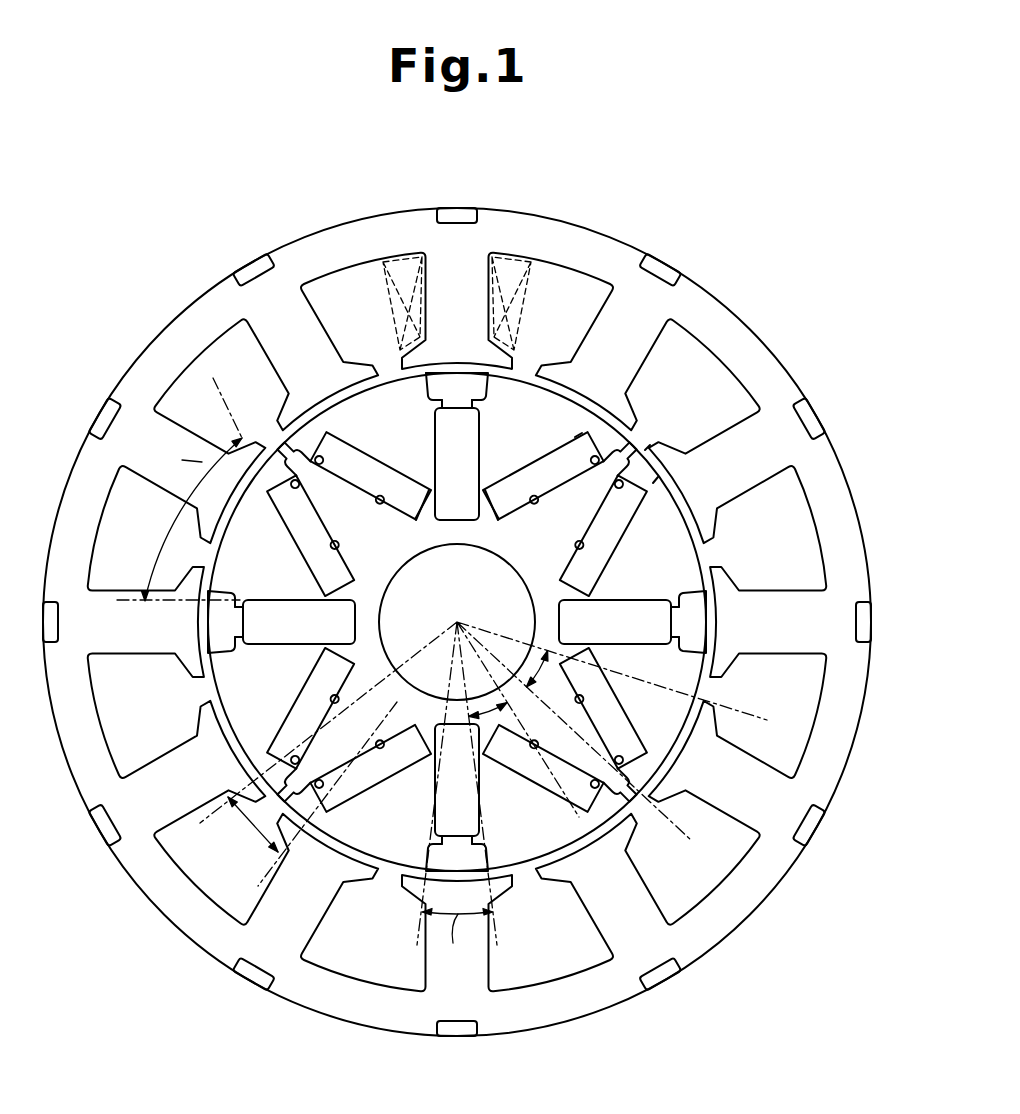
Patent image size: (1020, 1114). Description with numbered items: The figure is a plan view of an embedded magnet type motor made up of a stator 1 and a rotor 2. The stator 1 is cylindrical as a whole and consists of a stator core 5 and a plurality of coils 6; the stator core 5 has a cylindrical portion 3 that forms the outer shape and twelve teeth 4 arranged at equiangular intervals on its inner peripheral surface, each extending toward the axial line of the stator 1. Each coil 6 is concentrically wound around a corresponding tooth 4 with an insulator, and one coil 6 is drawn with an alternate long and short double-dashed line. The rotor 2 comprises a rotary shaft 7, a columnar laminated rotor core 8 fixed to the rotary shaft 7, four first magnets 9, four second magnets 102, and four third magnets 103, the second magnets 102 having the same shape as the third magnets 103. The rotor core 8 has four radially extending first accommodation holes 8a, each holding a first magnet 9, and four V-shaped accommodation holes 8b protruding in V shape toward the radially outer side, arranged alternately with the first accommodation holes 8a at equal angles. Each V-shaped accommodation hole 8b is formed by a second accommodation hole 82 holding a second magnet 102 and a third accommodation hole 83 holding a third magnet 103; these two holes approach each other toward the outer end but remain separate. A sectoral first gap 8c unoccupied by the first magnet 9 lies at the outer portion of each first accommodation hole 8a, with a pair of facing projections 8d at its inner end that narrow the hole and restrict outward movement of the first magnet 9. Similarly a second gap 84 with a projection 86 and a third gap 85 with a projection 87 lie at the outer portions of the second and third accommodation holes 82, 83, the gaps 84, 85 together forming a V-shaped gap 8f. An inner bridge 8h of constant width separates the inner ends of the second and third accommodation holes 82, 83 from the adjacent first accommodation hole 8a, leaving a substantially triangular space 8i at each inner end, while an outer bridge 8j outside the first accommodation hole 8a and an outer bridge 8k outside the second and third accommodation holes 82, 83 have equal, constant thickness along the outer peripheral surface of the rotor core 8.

The stator 1 is at (778, 338).
The rotor 2 is at (703, 560).
The cylindrical portion 3 is at (848, 735).
The teeth 4 is at (457, 250).
The stator core 5 is at (598, 222).
The coils 6 is at (540, 280).
The rotary shaft 7 is at (417, 567).
The rotor core 8 is at (509, 814).
The first accommodation holes 8a is at (478, 424).
The V-shaped accommodation holes 8b is at (333, 557).
The first gap 8c is at (433, 390).
The projections 8d is at (462, 400).
The V-shaped gap 8f is at (710, 371).
The inner bridge 8h is at (452, 520).
The space 8i is at (430, 523).
The outer bridge 8j is at (425, 363).
The outer bridge 8k is at (650, 445).
The first magnets 9 is at (435, 420).
The second accommodation hole 82 is at (280, 507).
The third accommodation hole 83 is at (577, 553).
The second gap 84 is at (630, 436).
The third gap 85 is at (633, 440).
The projection 86 is at (575, 437).
The projection 87 is at (658, 477).
The second magnets 102 is at (605, 415).
The third magnets 103 is at (345, 445).